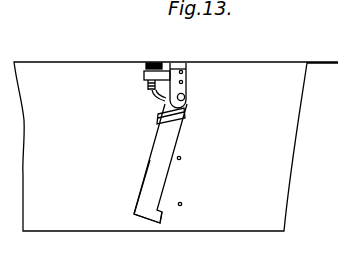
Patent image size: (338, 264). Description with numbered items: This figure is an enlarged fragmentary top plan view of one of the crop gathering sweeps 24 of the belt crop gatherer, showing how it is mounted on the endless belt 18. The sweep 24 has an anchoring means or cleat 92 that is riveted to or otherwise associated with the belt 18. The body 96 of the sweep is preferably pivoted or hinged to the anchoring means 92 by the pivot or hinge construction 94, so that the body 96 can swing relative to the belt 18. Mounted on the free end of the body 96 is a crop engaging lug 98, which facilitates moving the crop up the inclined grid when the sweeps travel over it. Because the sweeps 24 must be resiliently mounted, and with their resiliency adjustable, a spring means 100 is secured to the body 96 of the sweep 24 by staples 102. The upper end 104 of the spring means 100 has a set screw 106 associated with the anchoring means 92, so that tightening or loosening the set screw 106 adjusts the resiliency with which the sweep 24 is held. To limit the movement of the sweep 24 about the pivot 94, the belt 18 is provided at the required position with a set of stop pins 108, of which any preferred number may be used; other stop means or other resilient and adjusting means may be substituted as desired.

The endless belt 18 is at (283, 134).
The sweep 24 is at (144, 172).
The anchoring means 92 is at (182, 80).
The pivot or hinge construction 94 is at (184, 99).
The body 96 is at (140, 197).
The crop engaging lug 98 is at (158, 224).
The spring means 100 is at (157, 102).
The staples 102 is at (159, 121).
The upper end 104 is at (146, 92).
The set screw 106 is at (152, 63).
The stop pins 108 is at (182, 159).